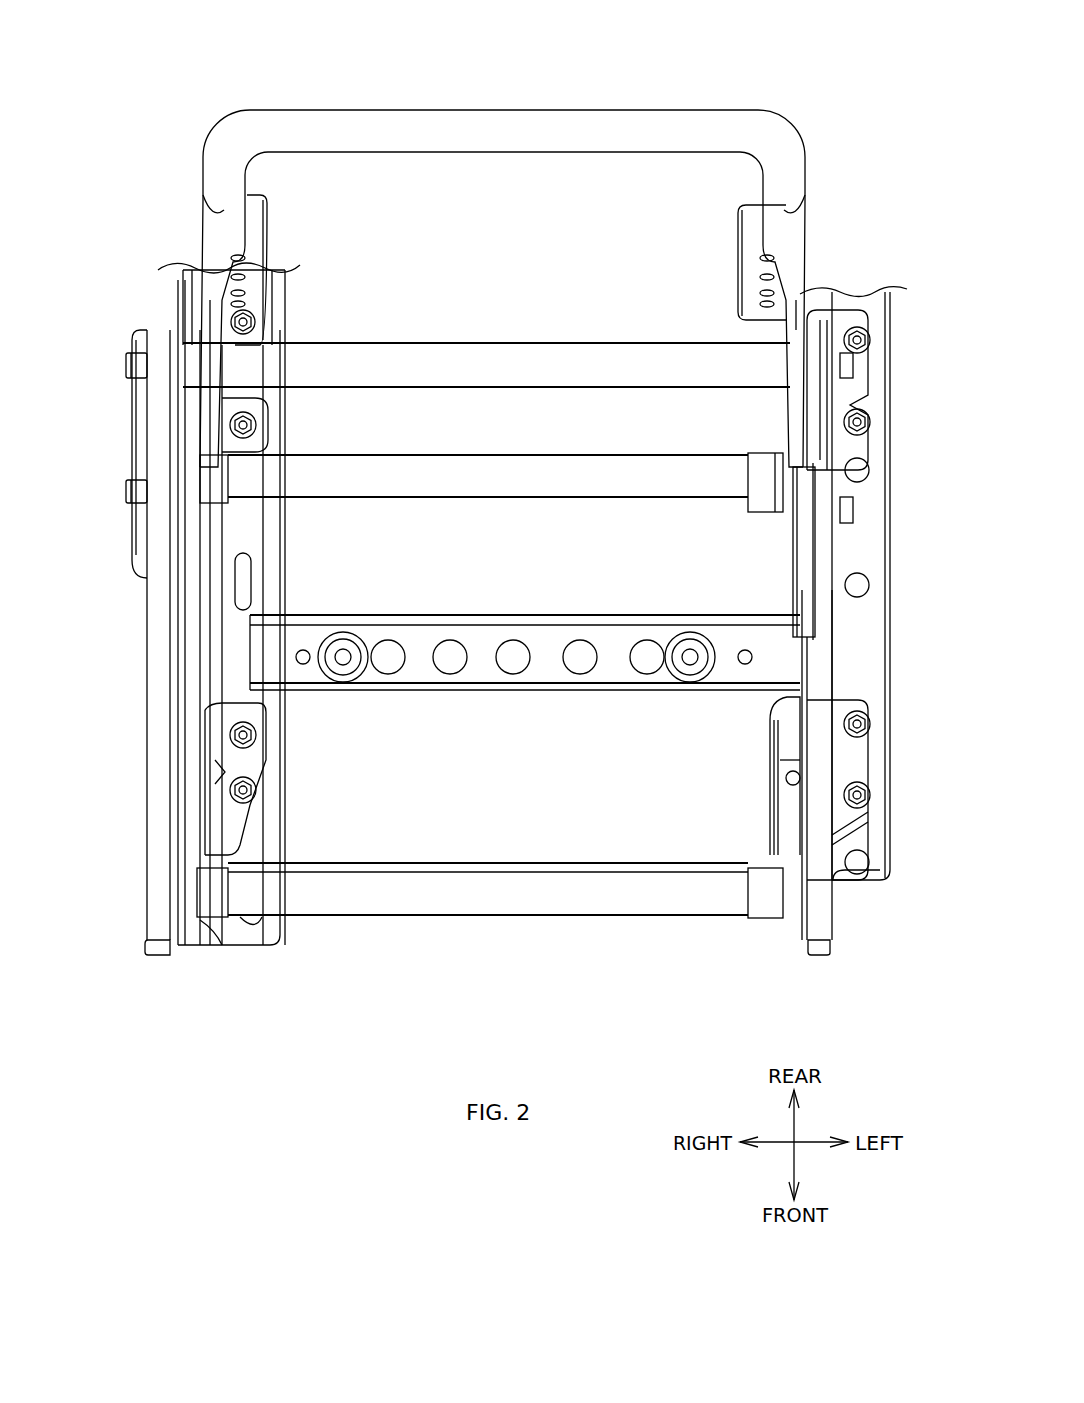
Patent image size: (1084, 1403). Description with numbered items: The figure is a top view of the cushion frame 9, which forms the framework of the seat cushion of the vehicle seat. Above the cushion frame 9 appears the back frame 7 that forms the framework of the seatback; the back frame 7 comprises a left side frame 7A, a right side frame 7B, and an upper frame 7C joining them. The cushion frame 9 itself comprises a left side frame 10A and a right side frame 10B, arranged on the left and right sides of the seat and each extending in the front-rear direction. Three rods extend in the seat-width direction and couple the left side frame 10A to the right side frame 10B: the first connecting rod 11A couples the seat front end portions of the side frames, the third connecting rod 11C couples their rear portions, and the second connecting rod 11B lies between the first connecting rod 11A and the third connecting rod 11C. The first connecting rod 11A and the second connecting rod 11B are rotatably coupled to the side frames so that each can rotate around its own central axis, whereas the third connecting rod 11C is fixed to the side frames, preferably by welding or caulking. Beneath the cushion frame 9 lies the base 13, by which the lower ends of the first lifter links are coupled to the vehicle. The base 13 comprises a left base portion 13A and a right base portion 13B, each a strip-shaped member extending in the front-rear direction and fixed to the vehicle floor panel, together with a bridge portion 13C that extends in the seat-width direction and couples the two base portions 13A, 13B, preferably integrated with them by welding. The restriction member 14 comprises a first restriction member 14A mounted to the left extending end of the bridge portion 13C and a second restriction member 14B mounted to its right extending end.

The back frame 7 is at (660, 108).
The left side frame 7A is at (763, 261).
The right side frame 7B is at (248, 293).
The upper frame 7C is at (497, 137).
The cushion frame 9 is at (364, 964).
The left side frame 10A is at (818, 957).
The right side frame 10B is at (157, 957).
The first connecting rod 11A is at (498, 917).
The second connecting rod 11B is at (500, 485).
The third connecting rod 11C is at (500, 343).
The base 13 is at (487, 708).
The left base portion 13A is at (770, 798).
The right base portion 13B is at (283, 775).
The bridge portion 13C is at (527, 700).
The restriction member 14 is at (330, 633).
The first restriction member 14A is at (710, 630).
The second restriction member 14B is at (365, 632).